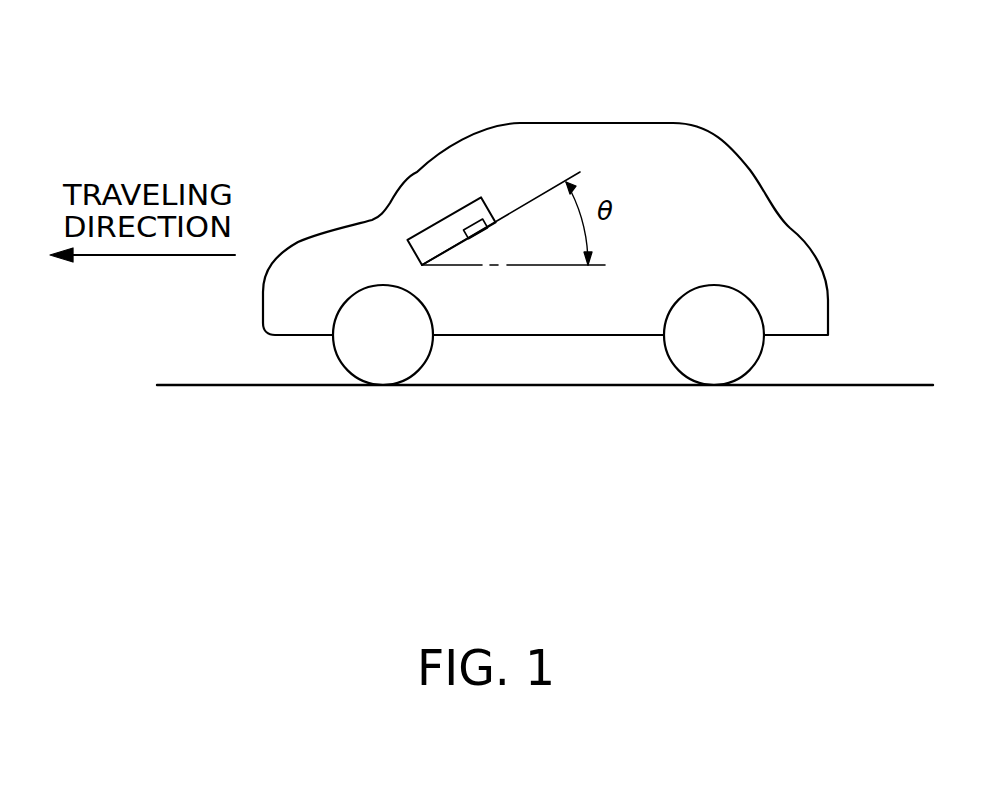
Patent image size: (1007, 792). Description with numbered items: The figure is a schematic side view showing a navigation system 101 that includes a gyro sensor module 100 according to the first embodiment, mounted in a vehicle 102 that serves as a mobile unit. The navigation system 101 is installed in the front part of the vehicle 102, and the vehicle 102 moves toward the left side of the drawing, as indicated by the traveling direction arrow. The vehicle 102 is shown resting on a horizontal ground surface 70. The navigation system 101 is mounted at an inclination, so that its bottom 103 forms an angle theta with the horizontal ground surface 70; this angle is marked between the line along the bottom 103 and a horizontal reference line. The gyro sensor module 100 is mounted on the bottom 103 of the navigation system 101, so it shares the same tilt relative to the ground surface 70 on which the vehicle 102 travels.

The horizontal ground surface 70 is at (882, 385).
The gyro sensor module 100 is at (467, 217).
The navigation system 101 is at (495, 210).
The vehicle 102 is at (600, 123).
The bottom 103 is at (434, 257).